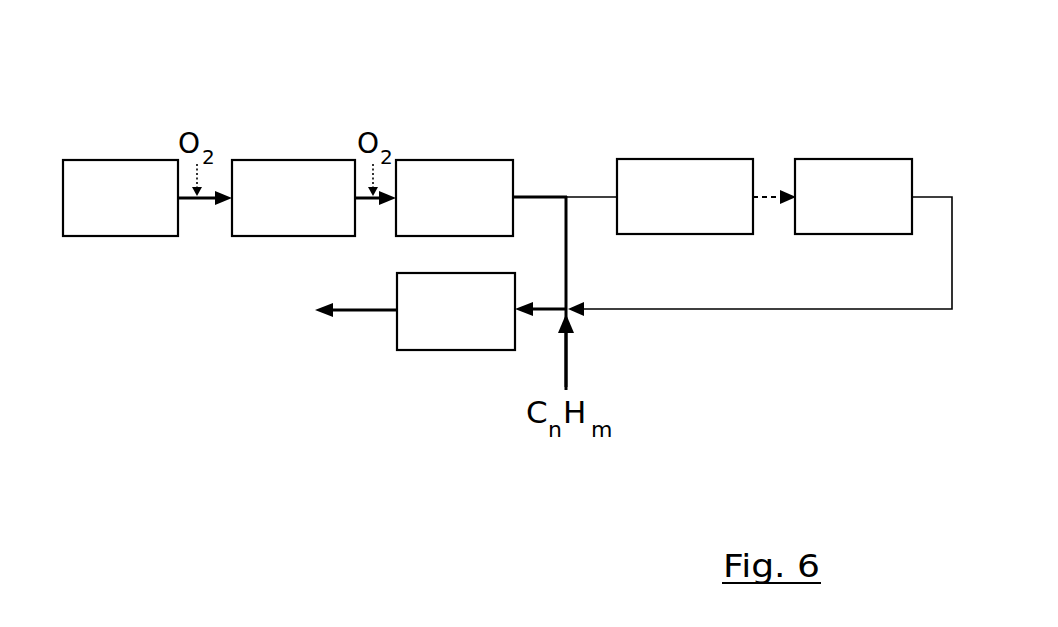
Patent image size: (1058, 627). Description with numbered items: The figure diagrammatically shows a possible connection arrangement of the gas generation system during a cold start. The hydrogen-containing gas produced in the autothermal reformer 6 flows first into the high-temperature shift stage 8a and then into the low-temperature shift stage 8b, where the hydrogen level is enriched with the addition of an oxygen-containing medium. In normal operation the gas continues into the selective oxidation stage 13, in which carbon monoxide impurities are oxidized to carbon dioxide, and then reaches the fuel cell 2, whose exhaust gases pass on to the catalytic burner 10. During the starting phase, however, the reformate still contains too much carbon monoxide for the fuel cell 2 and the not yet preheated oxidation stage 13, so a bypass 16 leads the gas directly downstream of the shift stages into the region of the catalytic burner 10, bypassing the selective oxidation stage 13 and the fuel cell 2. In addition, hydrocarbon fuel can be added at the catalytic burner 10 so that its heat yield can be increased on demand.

The autothermal reformer 6 is at (95, 177).
The high-temperature shift stage 8a is at (270, 175).
The low-temperature shift stage 8b is at (462, 178).
The selective oxidation stage 13 is at (672, 172).
The fuel cell 2 is at (882, 172).
The catalytic burner 10 is at (438, 328).
The bypass 16 is at (568, 270).